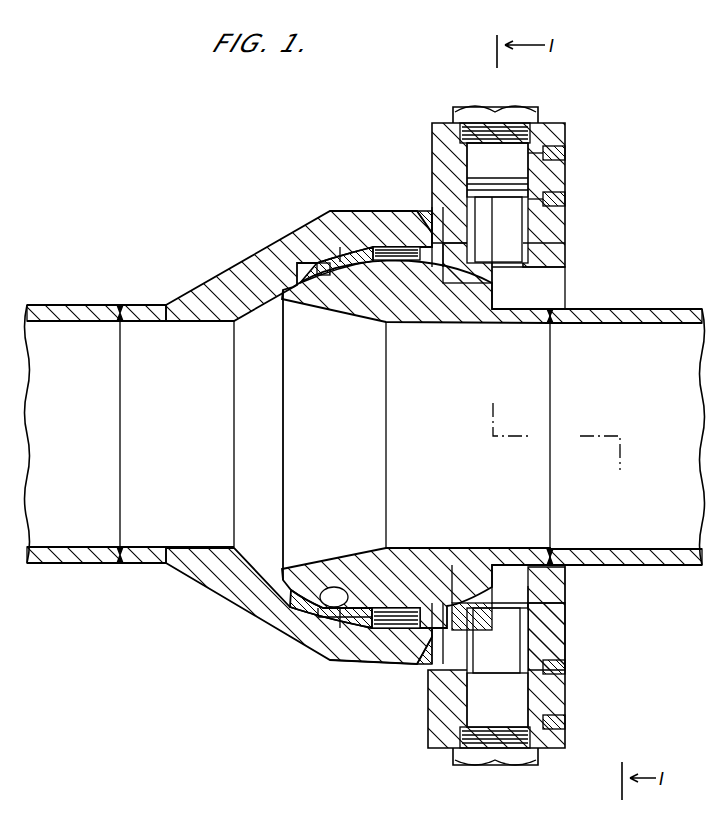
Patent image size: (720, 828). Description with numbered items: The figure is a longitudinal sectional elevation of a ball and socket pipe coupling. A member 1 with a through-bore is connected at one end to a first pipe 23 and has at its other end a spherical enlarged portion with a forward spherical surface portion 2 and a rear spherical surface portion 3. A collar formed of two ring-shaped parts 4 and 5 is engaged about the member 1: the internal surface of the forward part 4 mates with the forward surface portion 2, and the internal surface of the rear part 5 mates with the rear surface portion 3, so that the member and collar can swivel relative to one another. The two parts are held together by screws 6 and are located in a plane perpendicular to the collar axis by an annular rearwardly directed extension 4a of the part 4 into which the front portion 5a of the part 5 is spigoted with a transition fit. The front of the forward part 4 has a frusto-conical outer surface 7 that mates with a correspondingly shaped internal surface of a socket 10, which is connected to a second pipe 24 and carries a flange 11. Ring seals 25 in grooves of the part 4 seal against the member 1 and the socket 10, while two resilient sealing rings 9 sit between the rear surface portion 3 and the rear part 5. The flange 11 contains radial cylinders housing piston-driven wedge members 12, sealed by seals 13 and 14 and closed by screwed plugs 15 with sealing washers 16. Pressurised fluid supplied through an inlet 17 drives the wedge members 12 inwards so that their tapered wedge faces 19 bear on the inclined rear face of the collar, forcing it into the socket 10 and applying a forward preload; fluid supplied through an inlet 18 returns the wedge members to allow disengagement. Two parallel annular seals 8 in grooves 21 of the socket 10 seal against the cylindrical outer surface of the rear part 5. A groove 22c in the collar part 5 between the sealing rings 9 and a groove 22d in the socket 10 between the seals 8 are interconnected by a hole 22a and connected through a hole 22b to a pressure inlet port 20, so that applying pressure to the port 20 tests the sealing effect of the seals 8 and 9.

The member 1 is at (545, 310).
The forward spherical surface portion 2 is at (300, 600).
The rear spherical surface portion 3 is at (468, 580).
The forward ring-shaped collar part 4 is at (320, 612).
The annular rearwardly directed extension 4a is at (345, 640).
The rear ring-shaped collar part 5 is at (490, 600).
The front portion of rear collar part 5a is at (410, 590).
The screws 6 is at (350, 628).
The frusto-conical outer surface 7 is at (330, 255).
The annular seals 8 is at (425, 215).
The sealing rings 9 is at (438, 250).
The socket 10 is at (242, 278).
The flange 11 is at (432, 160).
The wedge members 12 is at (500, 240).
The seal 13 is at (530, 184).
The seal 14 is at (530, 236).
The screwed plugs 15 is at (472, 108).
The sealing washers 16 is at (455, 122).
The inlet 17 is at (566, 152).
The inlet 18 is at (566, 200).
The wedge faces 19 is at (530, 270).
The pressure inlet port 20 is at (430, 722).
The grooves 21 is at (470, 640).
The hole 22a is at (385, 655).
The hole 22b is at (425, 672).
The groove 22c is at (490, 566).
The groove 22d is at (560, 608).
The first pipe 23 is at (672, 310).
The second pipe 24 is at (95, 305).
The ring seals 25 is at (325, 262).